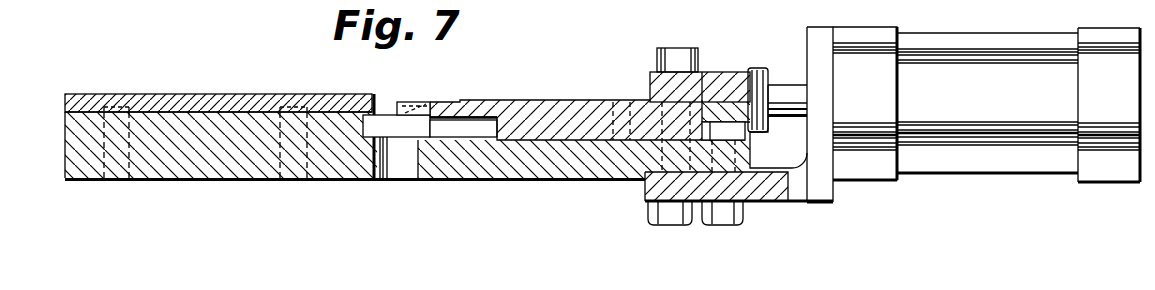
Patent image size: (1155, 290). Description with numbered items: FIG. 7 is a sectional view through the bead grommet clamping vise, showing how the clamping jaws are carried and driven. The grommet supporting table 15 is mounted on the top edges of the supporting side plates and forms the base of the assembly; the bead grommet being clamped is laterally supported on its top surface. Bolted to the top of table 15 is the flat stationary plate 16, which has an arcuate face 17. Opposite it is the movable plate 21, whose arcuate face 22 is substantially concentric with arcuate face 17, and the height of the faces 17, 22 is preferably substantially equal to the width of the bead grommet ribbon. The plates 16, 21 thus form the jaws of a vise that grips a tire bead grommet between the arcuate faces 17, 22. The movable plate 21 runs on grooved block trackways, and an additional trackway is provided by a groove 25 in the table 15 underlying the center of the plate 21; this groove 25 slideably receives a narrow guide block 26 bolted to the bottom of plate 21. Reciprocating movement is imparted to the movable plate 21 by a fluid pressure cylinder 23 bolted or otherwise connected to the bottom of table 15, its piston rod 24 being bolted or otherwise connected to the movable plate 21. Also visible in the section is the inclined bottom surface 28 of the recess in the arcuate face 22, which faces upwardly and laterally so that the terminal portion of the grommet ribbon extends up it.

The grommet supporting table 15 is at (207, 157).
The flat stationary plate 16 is at (208, 107).
The arcuate face 17 is at (374, 98).
The movable plate 21 is at (482, 100).
The arcuate face 22 is at (404, 108).
The fluid pressure cylinder 23 is at (1002, 68).
The piston rod 24 is at (793, 98).
The groove 25 is at (473, 127).
The narrow guide block 26 is at (568, 120).
The inclined bottom surface 28 is at (413, 105).